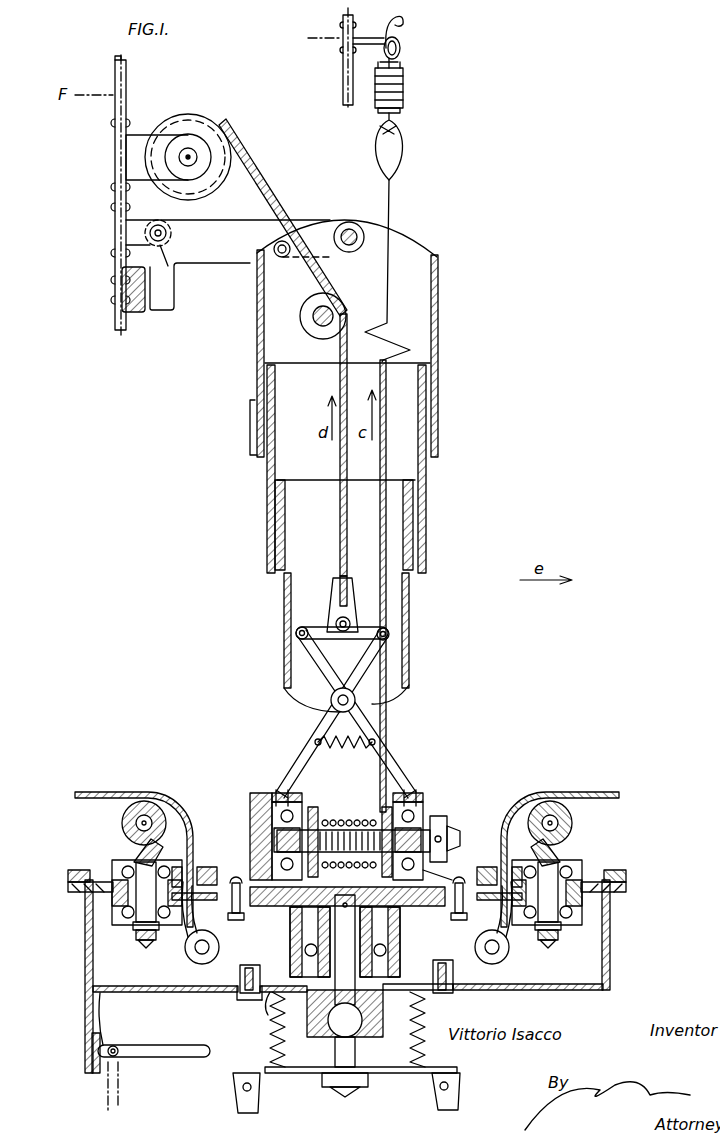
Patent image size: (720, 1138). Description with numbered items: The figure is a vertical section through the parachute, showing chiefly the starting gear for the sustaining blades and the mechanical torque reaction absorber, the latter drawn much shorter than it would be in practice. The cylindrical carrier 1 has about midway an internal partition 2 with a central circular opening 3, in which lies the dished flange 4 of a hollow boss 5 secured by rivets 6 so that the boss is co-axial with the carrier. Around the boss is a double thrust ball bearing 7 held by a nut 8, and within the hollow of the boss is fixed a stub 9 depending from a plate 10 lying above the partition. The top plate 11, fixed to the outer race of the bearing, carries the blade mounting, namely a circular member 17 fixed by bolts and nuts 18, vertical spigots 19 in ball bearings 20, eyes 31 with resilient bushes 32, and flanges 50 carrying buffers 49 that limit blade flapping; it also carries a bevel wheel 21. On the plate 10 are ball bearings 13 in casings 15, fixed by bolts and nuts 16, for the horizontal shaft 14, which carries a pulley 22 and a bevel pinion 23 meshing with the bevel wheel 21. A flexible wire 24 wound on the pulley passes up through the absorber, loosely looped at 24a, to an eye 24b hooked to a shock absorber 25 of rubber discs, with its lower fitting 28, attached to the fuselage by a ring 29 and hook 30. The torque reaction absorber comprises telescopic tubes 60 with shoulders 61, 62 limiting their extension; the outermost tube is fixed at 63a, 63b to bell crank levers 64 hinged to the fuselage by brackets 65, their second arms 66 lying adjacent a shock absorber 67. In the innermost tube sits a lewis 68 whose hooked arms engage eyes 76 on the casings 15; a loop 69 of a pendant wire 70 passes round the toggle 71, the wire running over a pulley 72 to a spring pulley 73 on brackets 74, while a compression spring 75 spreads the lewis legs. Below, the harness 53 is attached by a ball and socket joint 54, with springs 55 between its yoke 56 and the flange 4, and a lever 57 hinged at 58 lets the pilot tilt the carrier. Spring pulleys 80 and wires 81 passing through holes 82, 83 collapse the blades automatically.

The carrier 1 is at (85, 967).
The internal partition 2 is at (106, 1019).
The circular opening 3 is at (240, 998).
The dished flange 4 is at (262, 996).
The hollow boss 5 is at (270, 1000).
The rivets 6 is at (238, 970).
The double thrust ball bearing 7 is at (290, 937).
The nut 8 is at (300, 920).
The stub 9 is at (347, 915).
The plate 10 is at (390, 912).
The top plate 11 is at (403, 905).
The ball bearings 13 is at (272, 821).
The horizontal shaft 14 is at (440, 830).
The casings 15 is at (276, 792).
The bolts and nuts 16 is at (347, 899).
The circular member 17 is at (68, 870).
The bolts and nuts 18 is at (236, 880).
The vertical spigots 19 is at (134, 845).
The ball bearings 20 is at (130, 920).
The bevel wheel 21 is at (440, 880).
The pulley 22 is at (350, 866).
The bevel pinion 23 is at (250, 798).
The flexible wire 24 is at (387, 478).
The loose loop of wire 24a is at (400, 332).
The eye 24b is at (402, 152).
The shock absorber 25 is at (404, 83).
The housing bottom 28 is at (401, 108).
The ring 29 is at (401, 46).
The hook 30 is at (402, 16).
The eyes 31 is at (134, 828).
The resilient bushes 32 is at (122, 810).
The buffers 49 is at (206, 866).
The flanges 50 is at (98, 878).
The harness 53 is at (232, 1094).
The ball and socket joint 54 is at (330, 1040).
The springs 55 is at (270, 1050).
The yoke 56 is at (394, 1074).
The lever 57 is at (150, 1058).
The hinge 58 is at (110, 1057).
The telescopic tubes 60 is at (265, 490).
The shoulders 61 is at (428, 426).
The shoulders 62 is at (428, 388).
The fixing point 63a is at (350, 222).
The fixing point 63b is at (278, 256).
The bell crank levers 64 is at (240, 208).
The brackets 65 is at (145, 233).
The second arms 66 is at (154, 302).
The shock absorber 67 is at (120, 293).
The lewis 68 is at (360, 670).
The loop 69 is at (356, 606).
The pendant flexible wire 70 is at (340, 571).
The toggle 71 is at (392, 635).
The pulley 72 is at (312, 325).
The spring pulley 73 is at (196, 114).
The brackets 74 is at (138, 157).
The compression spring 75 is at (330, 742).
The eyes 76 is at (282, 788).
The spring pulleys 80 is at (186, 955).
The flexible wires 81 is at (128, 792).
The holes 82 is at (184, 925).
The holes 83 is at (178, 865).